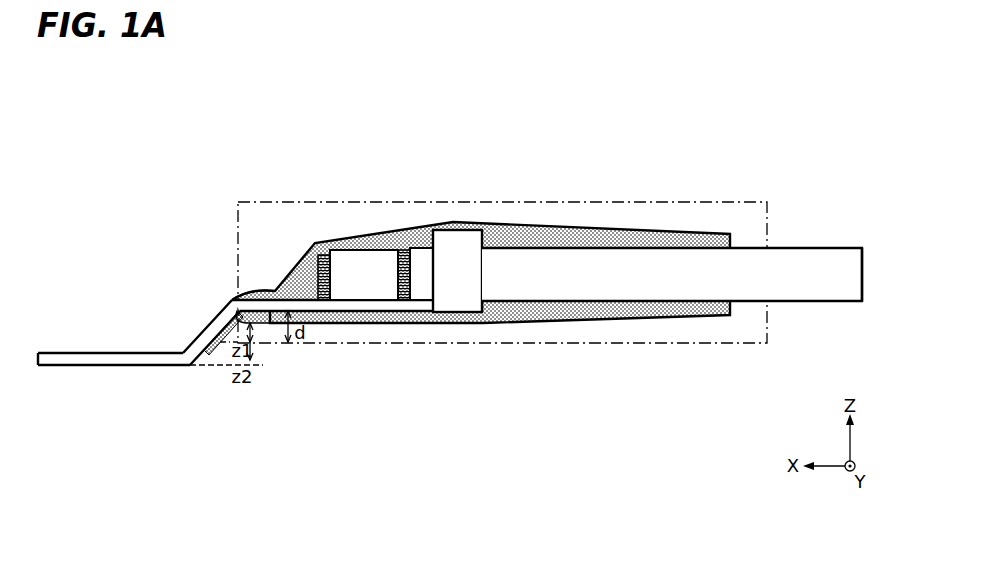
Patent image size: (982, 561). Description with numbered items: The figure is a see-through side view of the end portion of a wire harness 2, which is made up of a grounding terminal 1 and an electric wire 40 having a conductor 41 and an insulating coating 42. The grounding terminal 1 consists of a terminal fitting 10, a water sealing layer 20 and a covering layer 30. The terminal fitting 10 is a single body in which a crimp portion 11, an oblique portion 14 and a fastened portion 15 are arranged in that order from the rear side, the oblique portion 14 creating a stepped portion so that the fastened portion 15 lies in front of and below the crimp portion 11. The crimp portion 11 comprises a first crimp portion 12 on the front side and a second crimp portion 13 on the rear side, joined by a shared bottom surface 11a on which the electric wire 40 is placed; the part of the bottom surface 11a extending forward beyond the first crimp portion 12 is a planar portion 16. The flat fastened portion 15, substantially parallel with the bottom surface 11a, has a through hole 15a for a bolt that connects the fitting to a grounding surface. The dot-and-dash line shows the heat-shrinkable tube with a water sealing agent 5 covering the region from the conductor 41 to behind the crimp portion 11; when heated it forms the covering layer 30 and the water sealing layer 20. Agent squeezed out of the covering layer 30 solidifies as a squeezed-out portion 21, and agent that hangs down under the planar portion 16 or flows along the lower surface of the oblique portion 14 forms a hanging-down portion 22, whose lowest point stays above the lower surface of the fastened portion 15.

The grounding terminal 1 is at (367, 144).
The wire harness 2 is at (502, 218).
The heat-shrinkable tube with a water sealing agent 5 is at (578, 344).
The terminal fitting 10 is at (359, 225).
The crimp portion 11 is at (452, 416).
The bottom surface 11a is at (416, 302).
The first crimp portion 12 is at (358, 302).
The second crimp portion 13 is at (472, 302).
The oblique portion 14 is at (200, 347).
The fastened portion 15 is at (53, 353).
The through hole 15a is at (102, 353).
The planar portion 16 is at (243, 307).
The water sealing layer 20 is at (403, 232).
The squeezed-out portion 21 is at (263, 290).
The hanging-down portion 22 is at (258, 320).
The covering layer 30 is at (462, 225).
The electric wire 40 is at (785, 248).
The conductor 41 is at (307, 250).
The insulating coating 42 is at (835, 262).